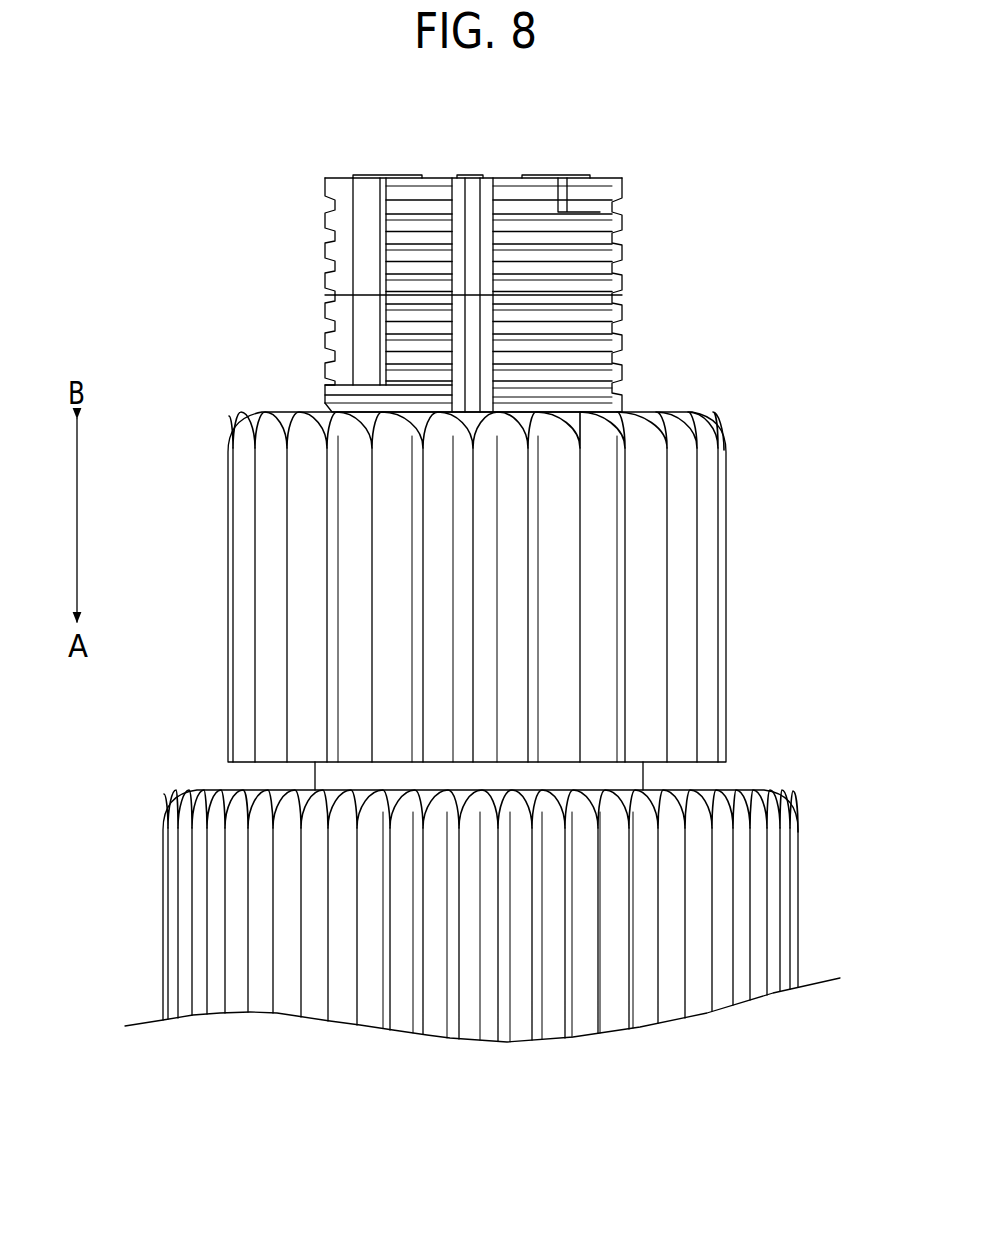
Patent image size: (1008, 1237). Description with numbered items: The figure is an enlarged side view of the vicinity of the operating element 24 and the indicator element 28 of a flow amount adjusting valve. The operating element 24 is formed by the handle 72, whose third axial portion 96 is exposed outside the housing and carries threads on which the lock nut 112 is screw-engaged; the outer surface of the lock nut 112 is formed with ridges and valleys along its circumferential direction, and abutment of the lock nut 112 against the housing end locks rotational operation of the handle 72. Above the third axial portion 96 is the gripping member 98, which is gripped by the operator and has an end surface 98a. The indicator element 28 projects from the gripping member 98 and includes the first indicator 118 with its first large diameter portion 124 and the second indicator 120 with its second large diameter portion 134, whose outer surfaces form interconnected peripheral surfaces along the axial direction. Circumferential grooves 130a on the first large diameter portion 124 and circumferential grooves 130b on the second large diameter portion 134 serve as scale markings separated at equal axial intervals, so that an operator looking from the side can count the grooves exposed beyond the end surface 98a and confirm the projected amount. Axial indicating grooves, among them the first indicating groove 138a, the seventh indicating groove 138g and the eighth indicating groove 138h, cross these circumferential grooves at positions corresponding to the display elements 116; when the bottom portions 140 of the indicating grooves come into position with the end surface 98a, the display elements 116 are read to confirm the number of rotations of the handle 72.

The operating element 24 is at (716, 410).
The indicator element 28 is at (328, 174).
The second indicator 120 is at (319, 213).
The first indicator 118 is at (321, 367).
The seventh indicating groove 138g is at (368, 264).
The second large diameter portion 134 is at (431, 190).
The eighth indicating groove 138h is at (471, 186).
The display elements 116 is at (552, 176).
The first indicating groove 138a is at (575, 205).
The circumferential grooves 130b is at (614, 262).
The circumferential grooves 130a is at (612, 348).
The first large diameter portion 124 is at (612, 380).
The bottom portions 140 is at (474, 412).
The handle 72 is at (224, 641).
The gripping member 98 is at (706, 500).
The end surface 98a is at (288, 410).
The third axial portion 96 is at (622, 770).
The lock nut 112 is at (773, 868).